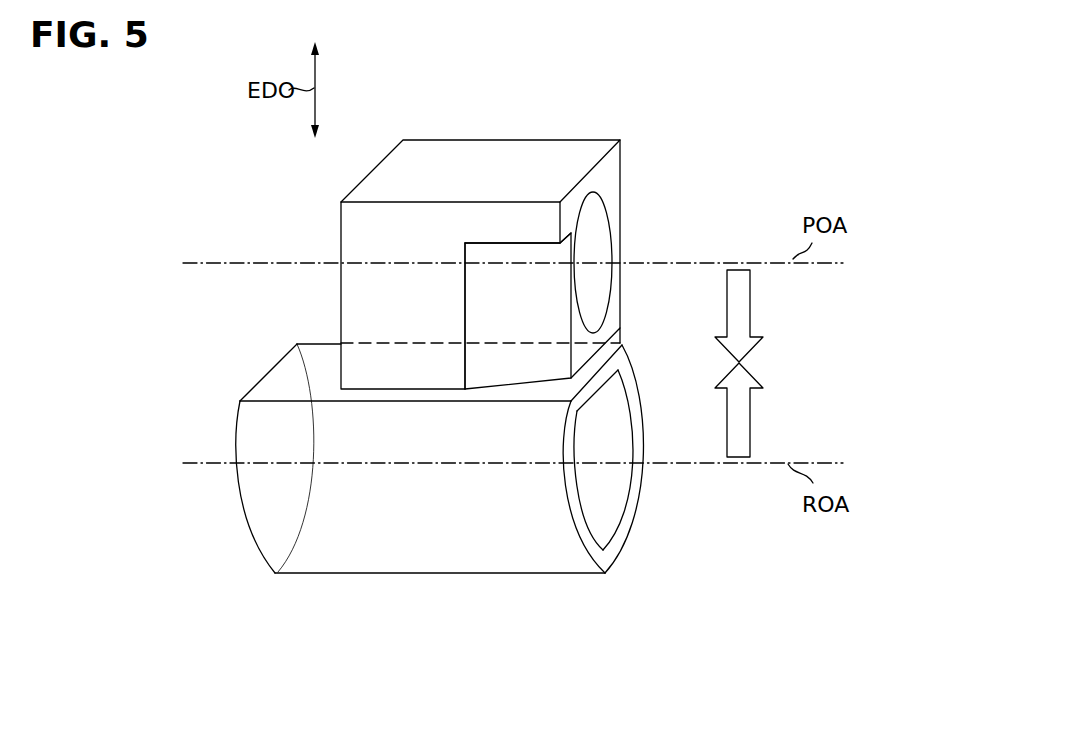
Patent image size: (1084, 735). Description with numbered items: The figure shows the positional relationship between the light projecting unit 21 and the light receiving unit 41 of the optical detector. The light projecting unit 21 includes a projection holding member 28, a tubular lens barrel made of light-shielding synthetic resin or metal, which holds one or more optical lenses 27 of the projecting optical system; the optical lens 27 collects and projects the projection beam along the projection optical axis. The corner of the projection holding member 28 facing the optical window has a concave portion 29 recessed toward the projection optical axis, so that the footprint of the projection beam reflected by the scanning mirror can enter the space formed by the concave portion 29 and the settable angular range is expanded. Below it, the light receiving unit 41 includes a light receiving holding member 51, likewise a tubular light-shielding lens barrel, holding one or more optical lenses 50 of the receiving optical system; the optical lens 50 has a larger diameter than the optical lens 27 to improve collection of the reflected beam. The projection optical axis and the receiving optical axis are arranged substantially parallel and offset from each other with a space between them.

The light projecting unit 21 is at (309, 193).
The optical lens 27 is at (605, 227).
The projection holding member 28 is at (493, 140).
The concave portion 29 is at (517, 288).
The light receiving unit 41 is at (187, 358).
The optical lens 50 is at (620, 492).
The light receiving holding member 51 is at (400, 575).